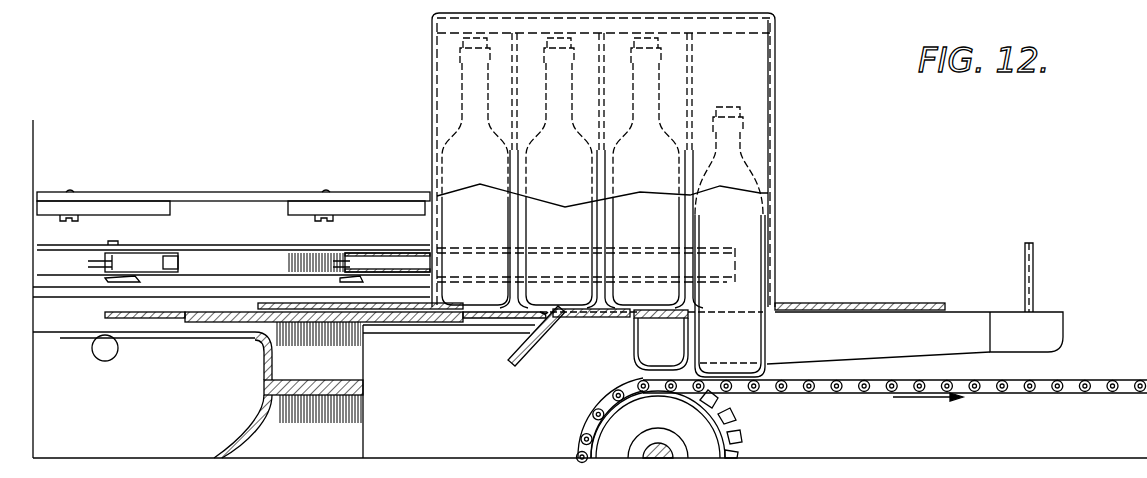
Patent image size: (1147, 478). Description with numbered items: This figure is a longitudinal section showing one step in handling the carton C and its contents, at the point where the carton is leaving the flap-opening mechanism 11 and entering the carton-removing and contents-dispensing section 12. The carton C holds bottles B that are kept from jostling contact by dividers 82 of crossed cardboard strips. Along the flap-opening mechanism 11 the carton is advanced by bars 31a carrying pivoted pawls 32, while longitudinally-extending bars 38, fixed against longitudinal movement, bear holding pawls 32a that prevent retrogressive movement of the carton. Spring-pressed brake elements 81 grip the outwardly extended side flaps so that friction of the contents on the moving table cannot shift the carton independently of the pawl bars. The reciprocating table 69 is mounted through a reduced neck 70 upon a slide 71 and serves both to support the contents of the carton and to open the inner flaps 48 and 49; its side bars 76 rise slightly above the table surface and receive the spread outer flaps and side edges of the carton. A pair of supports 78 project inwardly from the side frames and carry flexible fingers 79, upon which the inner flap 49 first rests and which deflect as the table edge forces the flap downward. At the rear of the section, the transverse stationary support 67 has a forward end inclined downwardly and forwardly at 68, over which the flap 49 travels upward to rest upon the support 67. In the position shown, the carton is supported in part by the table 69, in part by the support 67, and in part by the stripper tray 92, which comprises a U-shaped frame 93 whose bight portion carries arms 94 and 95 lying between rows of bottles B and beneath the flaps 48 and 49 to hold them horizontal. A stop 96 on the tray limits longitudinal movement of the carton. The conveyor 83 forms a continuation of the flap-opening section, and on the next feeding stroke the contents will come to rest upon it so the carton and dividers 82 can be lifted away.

The flap-opening mechanism 11 is at (187, 171).
The carton-removing and contents-dispensing section 12 is at (1074, 230).
The longitudinally-extending bars 38 is at (227, 197).
The bars 31a is at (160, 246).
The holding pawls 32a is at (361, 197).
The pawls 32 is at (392, 263).
The spring-pressed brake elements 81 is at (197, 293).
The inner flap 48 is at (288, 303).
The inner flap 49 is at (840, 303).
The transverse stationary support 67 is at (597, 317).
The inclined forward end 68 is at (526, 363).
The reciprocating table 69 is at (478, 318).
The reduced neck 70 is at (352, 360).
The slide 71 is at (358, 422).
The side bars 76 is at (63, 303).
The supports 78 is at (113, 357).
The flexible fingers 79 is at (204, 338).
The dividers 82 is at (434, 28).
The conveyor 83 is at (1045, 395).
The stripper tray 92 is at (637, 360).
The U shaped frame 93 is at (673, 318).
The arm 94 is at (992, 332).
The arm 95 is at (1063, 327).
The stop 96 is at (1036, 270).
The carton C is at (775, 75).
The bottles B is at (486, 231).